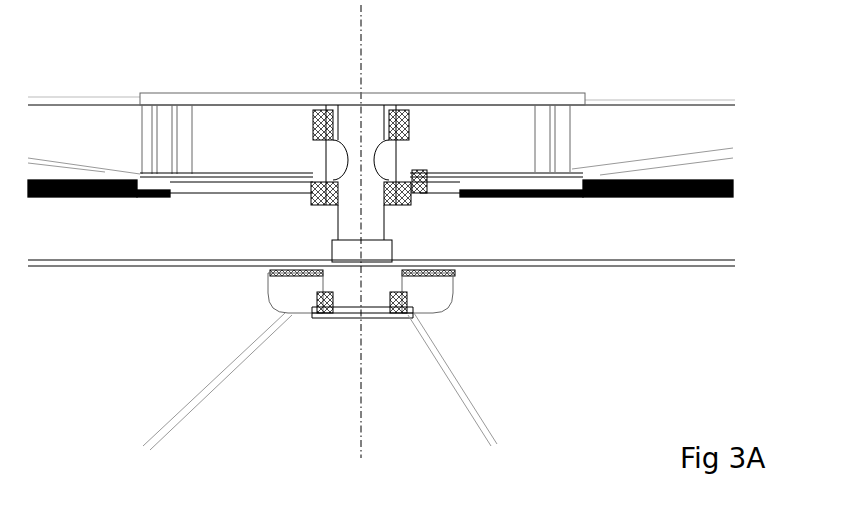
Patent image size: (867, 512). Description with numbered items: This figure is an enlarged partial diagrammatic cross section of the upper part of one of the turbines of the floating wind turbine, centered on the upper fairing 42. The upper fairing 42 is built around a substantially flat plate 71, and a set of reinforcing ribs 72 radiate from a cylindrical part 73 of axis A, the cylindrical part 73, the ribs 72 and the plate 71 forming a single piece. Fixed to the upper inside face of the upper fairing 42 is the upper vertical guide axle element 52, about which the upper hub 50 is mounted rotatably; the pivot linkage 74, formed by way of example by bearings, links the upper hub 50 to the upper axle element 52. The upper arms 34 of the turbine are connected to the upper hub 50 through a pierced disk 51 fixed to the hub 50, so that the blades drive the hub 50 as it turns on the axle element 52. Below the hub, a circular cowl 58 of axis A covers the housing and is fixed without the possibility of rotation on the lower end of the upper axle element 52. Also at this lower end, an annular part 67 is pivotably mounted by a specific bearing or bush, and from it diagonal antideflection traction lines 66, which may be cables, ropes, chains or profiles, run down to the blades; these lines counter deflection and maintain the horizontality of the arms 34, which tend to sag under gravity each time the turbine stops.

The arm 34 is at (100, 197).
The upper fairing 42 is at (489, 90).
The upper hub 50 is at (316, 152).
The disk 51 is at (247, 182).
The upper vertical guide axle element 52 is at (383, 251).
The circular cowl 58 is at (600, 266).
The diagonal antideflection traction line 66 is at (204, 396).
The annular part 67 is at (444, 291).
The plate 71 is at (76, 97).
The reinforcing ribs 72 is at (54, 145).
The cylindrical part 73 is at (183, 128).
The pivot linkage 74 is at (411, 136).